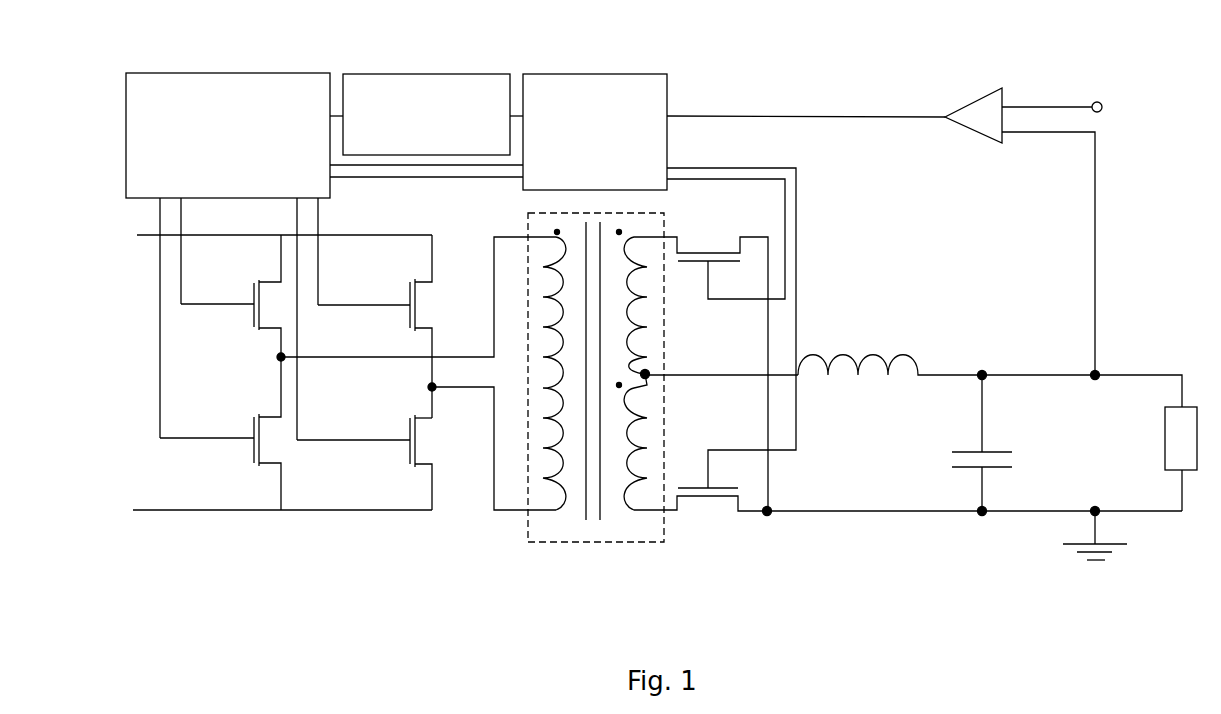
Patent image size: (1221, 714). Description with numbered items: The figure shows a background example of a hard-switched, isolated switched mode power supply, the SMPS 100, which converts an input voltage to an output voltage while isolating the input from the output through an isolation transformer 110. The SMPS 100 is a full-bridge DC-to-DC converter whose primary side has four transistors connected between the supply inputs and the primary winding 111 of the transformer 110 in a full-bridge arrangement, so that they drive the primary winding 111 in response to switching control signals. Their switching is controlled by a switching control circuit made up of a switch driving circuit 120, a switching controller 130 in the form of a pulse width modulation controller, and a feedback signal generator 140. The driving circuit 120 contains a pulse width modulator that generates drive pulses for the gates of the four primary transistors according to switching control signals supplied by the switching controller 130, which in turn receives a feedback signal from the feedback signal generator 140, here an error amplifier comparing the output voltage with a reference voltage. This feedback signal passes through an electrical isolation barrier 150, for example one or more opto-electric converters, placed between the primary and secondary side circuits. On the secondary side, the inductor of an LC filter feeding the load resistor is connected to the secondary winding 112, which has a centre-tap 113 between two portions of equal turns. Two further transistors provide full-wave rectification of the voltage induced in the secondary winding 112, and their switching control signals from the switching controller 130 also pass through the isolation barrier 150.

The SMPS 100 is at (855, 57).
The isolation transformer 110 is at (588, 393).
The primary winding 111 is at (550, 524).
The secondary winding 112 is at (632, 524).
The centre-tap 113 is at (650, 378).
The switch driving circuit 120 is at (206, 73).
The switching controller 130 is at (422, 74).
The feedback signal generator 140 is at (978, 100).
The electrical isolation barrier 150 is at (602, 74).